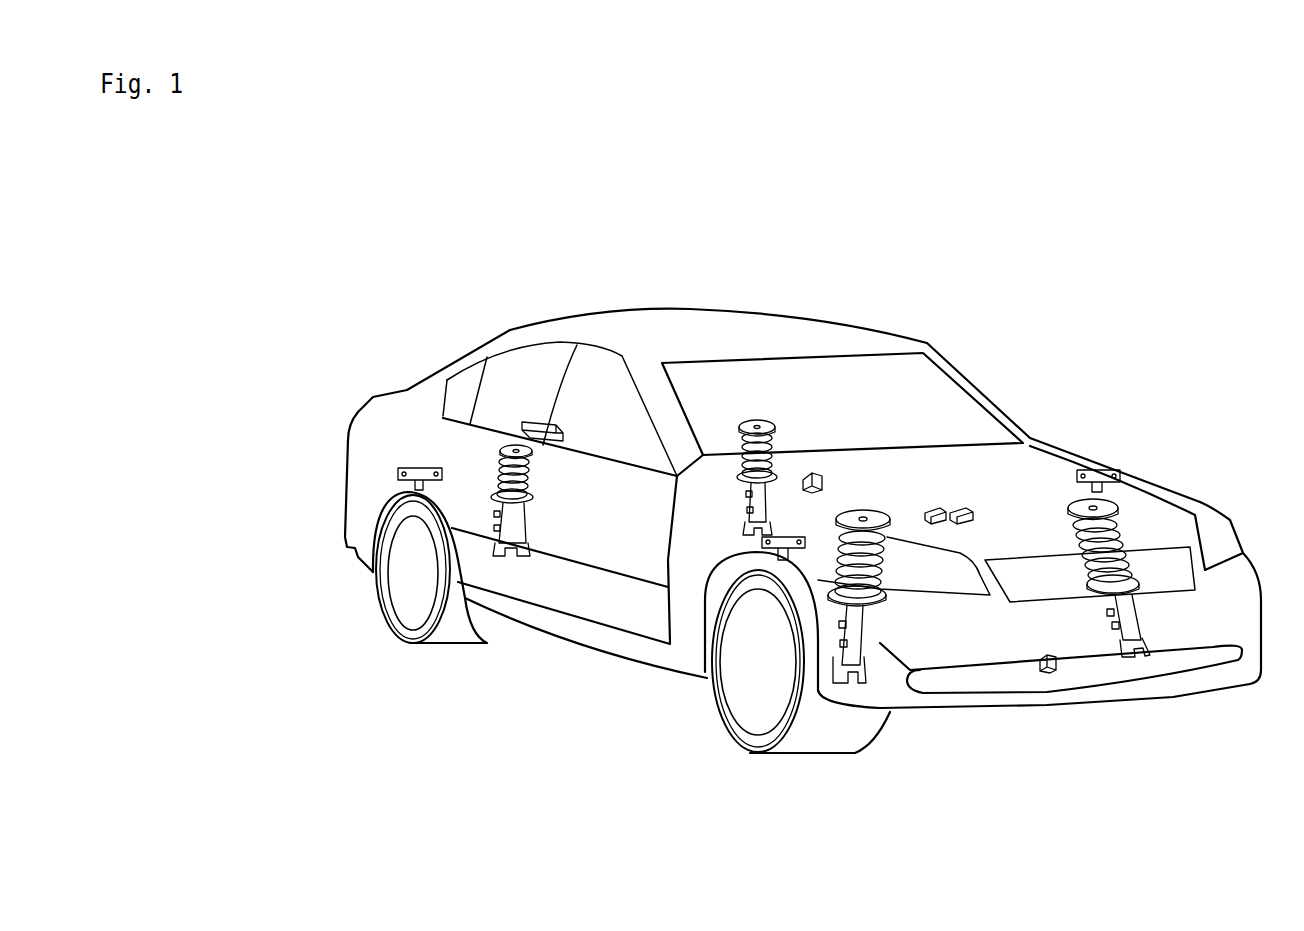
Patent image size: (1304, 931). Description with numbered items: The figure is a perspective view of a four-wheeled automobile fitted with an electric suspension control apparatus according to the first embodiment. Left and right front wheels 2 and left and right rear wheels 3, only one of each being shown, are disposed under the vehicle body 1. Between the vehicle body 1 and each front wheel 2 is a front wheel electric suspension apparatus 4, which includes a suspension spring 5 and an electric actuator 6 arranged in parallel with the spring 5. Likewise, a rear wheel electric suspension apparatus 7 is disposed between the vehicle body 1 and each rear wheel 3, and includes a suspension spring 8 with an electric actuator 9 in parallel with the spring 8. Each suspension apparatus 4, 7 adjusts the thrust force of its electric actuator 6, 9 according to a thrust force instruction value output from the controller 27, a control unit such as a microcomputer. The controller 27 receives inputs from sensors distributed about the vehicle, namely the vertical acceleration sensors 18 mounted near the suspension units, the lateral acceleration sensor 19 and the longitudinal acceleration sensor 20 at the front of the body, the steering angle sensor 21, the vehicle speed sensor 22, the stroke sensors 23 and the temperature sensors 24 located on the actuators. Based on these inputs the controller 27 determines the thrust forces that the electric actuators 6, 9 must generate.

The vehicle body 1 is at (652, 308).
The front wheels 2 is at (801, 752).
The rear wheels 3 is at (383, 585).
The front wheel electric suspension apparatus 4 is at (888, 575).
The suspension spring 5 is at (832, 568).
The electric actuator 6 is at (853, 625).
The rear wheel electric suspension apparatus 7 is at (498, 438).
The suspension spring 8 is at (497, 470).
The electric actuator 9 is at (520, 505).
The vertical acceleration sensor 18 is at (410, 482).
The lateral acceleration sensor 19 is at (960, 510).
The longitudinal acceleration sensor 20 is at (938, 510).
The steering angle sensor 21 is at (815, 478).
The vehicle speed sensor 22 is at (1050, 675).
The stroke sensor 23 is at (497, 518).
The temperature sensor 24 is at (505, 532).
The controller 27 is at (540, 422).